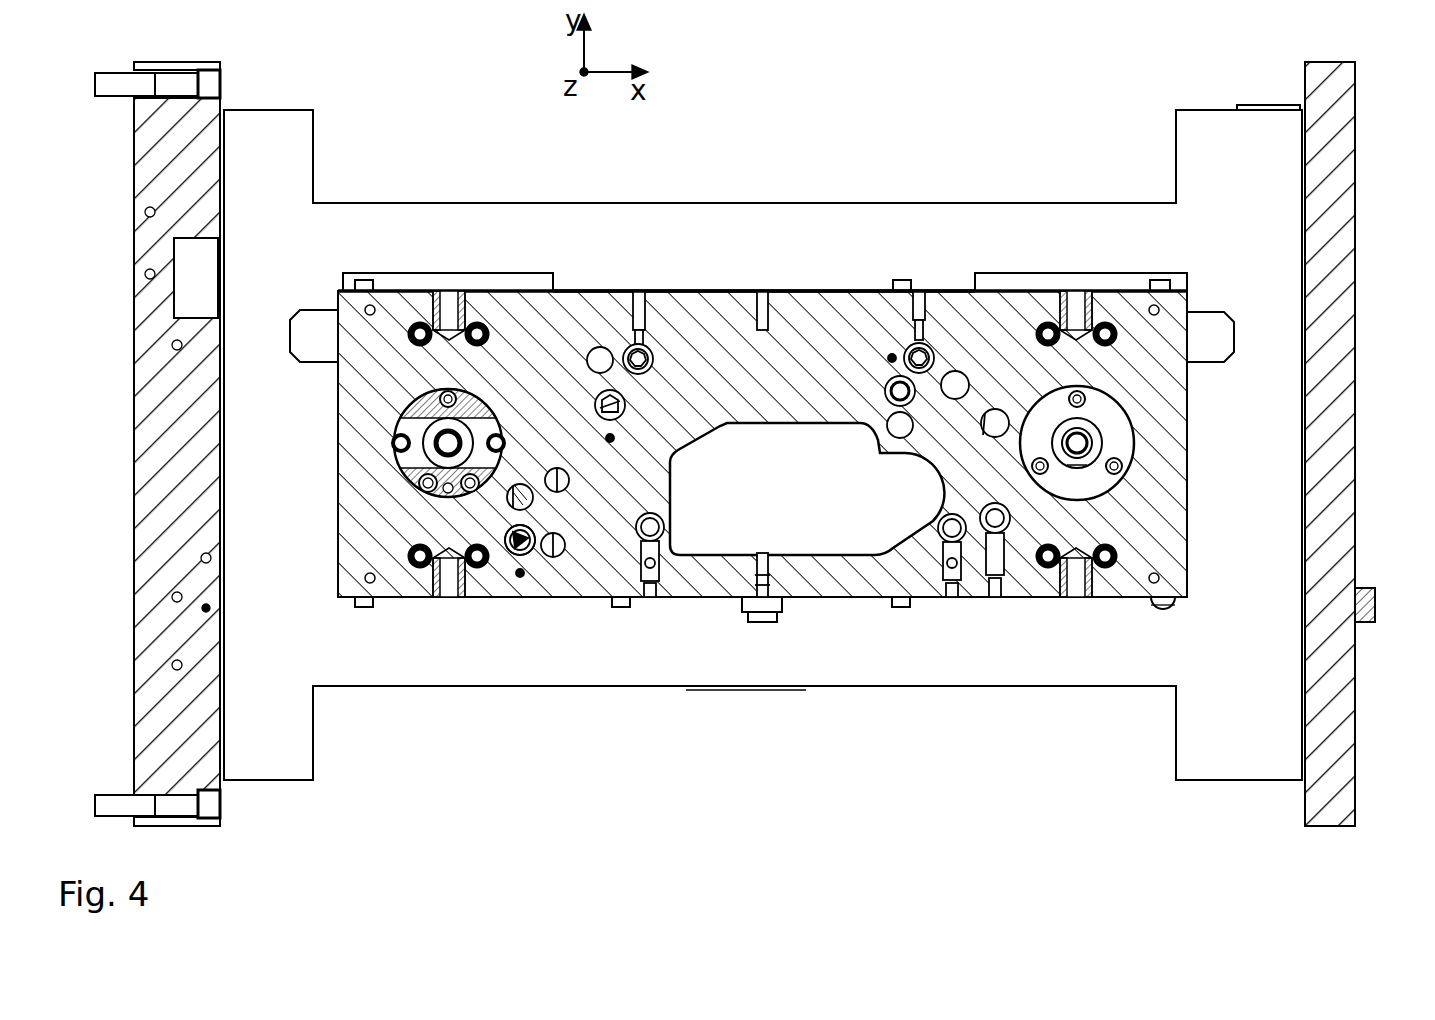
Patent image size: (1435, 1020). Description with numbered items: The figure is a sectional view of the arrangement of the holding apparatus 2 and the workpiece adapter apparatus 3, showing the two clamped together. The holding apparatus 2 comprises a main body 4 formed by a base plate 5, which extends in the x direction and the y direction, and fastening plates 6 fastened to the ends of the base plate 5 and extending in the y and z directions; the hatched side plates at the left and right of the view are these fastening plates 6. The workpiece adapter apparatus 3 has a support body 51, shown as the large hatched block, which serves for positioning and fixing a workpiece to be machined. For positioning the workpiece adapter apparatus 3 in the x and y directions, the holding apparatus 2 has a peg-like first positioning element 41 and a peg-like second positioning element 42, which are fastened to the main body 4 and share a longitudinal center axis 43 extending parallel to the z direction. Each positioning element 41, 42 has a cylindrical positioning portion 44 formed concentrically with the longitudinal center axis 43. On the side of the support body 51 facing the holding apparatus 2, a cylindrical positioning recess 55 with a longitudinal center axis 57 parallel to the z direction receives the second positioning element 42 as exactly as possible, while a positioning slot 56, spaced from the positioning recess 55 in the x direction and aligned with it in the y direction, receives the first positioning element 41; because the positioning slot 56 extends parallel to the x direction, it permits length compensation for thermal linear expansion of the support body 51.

The holding apparatus 2 is at (1222, 96).
The workpiece adapter apparatus 3 is at (984, 276).
The main body 4 is at (1378, 180).
The base plate 5 is at (1010, 700).
The fastening plates 6 is at (140, 296).
The first positioning element 41 is at (478, 420).
The second positioning element 42 is at (1048, 408).
The longitudinal center axis 43 is at (448, 445).
The cylindrical positioning portion 44 is at (420, 400).
The support body 51 is at (742, 300).
The cylindrical positioning recess 55 is at (1090, 463).
The positioning slot 56 is at (518, 550).
The longitudinal center axis 57 is at (1070, 425).